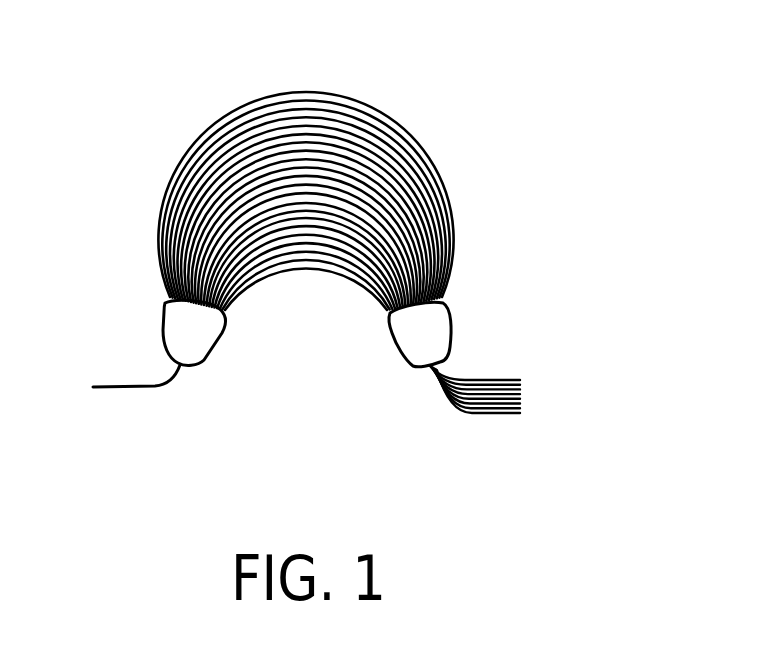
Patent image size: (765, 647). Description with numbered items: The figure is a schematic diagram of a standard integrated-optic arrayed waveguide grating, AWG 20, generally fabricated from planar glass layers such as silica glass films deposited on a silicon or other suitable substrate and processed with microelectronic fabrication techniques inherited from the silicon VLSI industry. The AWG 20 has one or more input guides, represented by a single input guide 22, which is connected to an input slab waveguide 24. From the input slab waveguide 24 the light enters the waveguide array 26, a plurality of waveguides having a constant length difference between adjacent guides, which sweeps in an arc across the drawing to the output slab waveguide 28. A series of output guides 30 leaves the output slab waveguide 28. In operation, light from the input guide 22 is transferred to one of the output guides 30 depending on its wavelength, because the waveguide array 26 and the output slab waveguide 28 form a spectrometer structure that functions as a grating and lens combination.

The AWG 20 is at (537, 100).
The input guide 22 is at (157, 386).
The input slab waveguide 24 is at (190, 322).
The waveguide array 26 is at (196, 128).
The output slab waveguide 28 is at (423, 335).
The output guides 30 is at (563, 380).